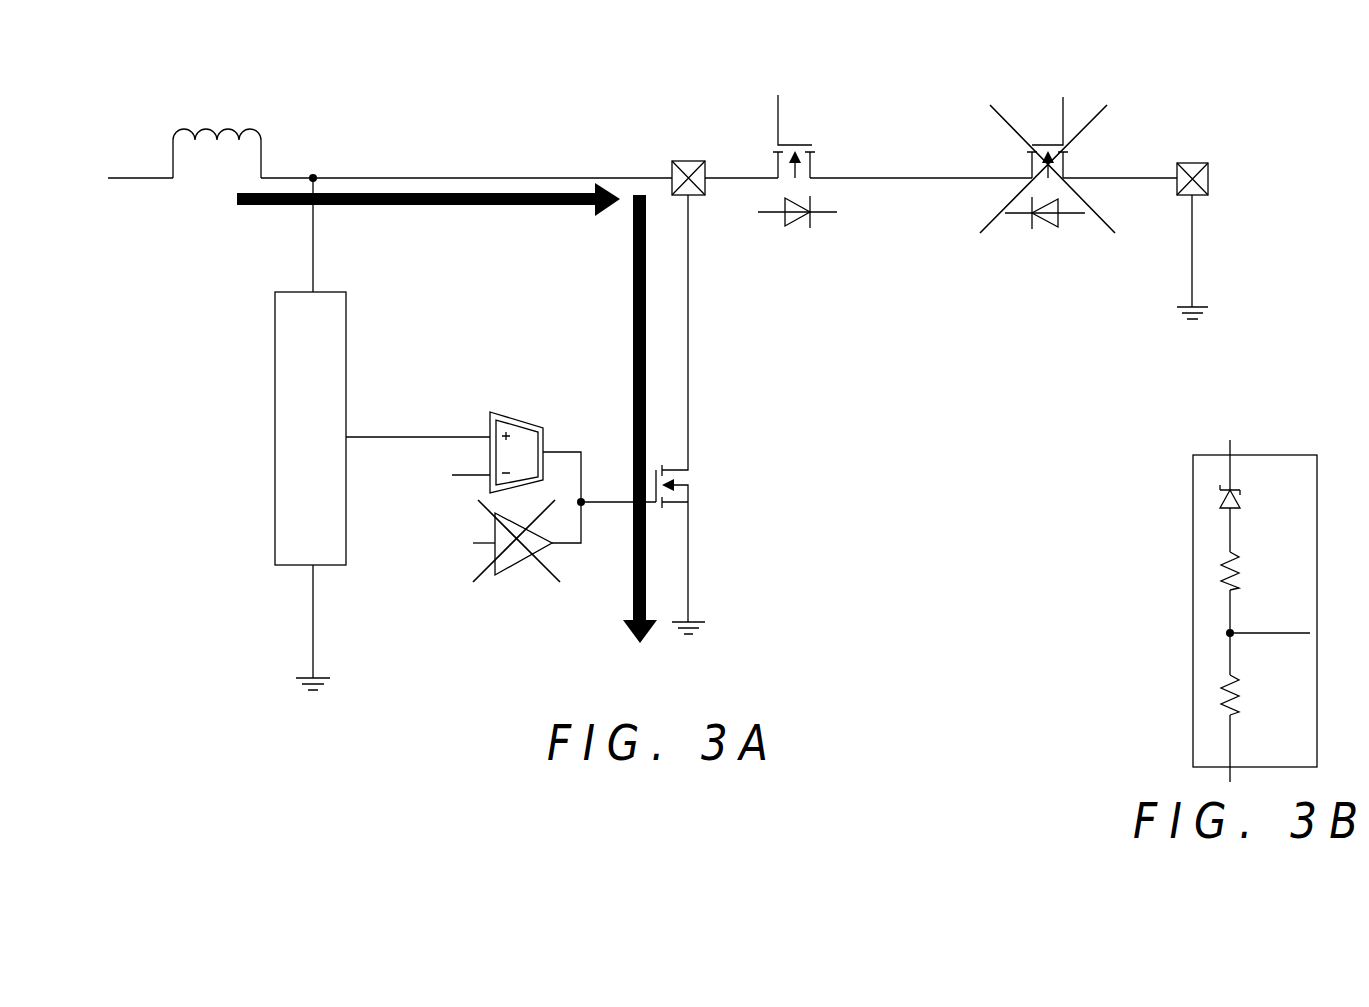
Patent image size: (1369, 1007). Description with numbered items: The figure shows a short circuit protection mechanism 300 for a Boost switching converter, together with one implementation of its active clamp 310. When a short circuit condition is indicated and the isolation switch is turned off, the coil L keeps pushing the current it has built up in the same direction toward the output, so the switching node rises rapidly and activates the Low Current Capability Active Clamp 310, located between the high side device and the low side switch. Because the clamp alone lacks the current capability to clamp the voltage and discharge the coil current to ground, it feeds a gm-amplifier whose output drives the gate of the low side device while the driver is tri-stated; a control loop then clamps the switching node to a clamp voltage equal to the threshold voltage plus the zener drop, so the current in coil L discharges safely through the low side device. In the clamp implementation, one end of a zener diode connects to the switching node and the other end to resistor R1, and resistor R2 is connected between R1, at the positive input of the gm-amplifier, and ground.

In FIG. 3A, the short circuit protection mechanism 300 is at (375, 42).
In FIG. 3A, the active clamp 310 is at (289, 292).
In FIG. 3B, the active clamp 310 is at (1204, 430).
In FIG. 3A, the coil L is at (217, 141).
In FIG. 3B, the resistor R1 is at (1250, 571).
In FIG. 3B, the resistor R2 is at (1250, 695).